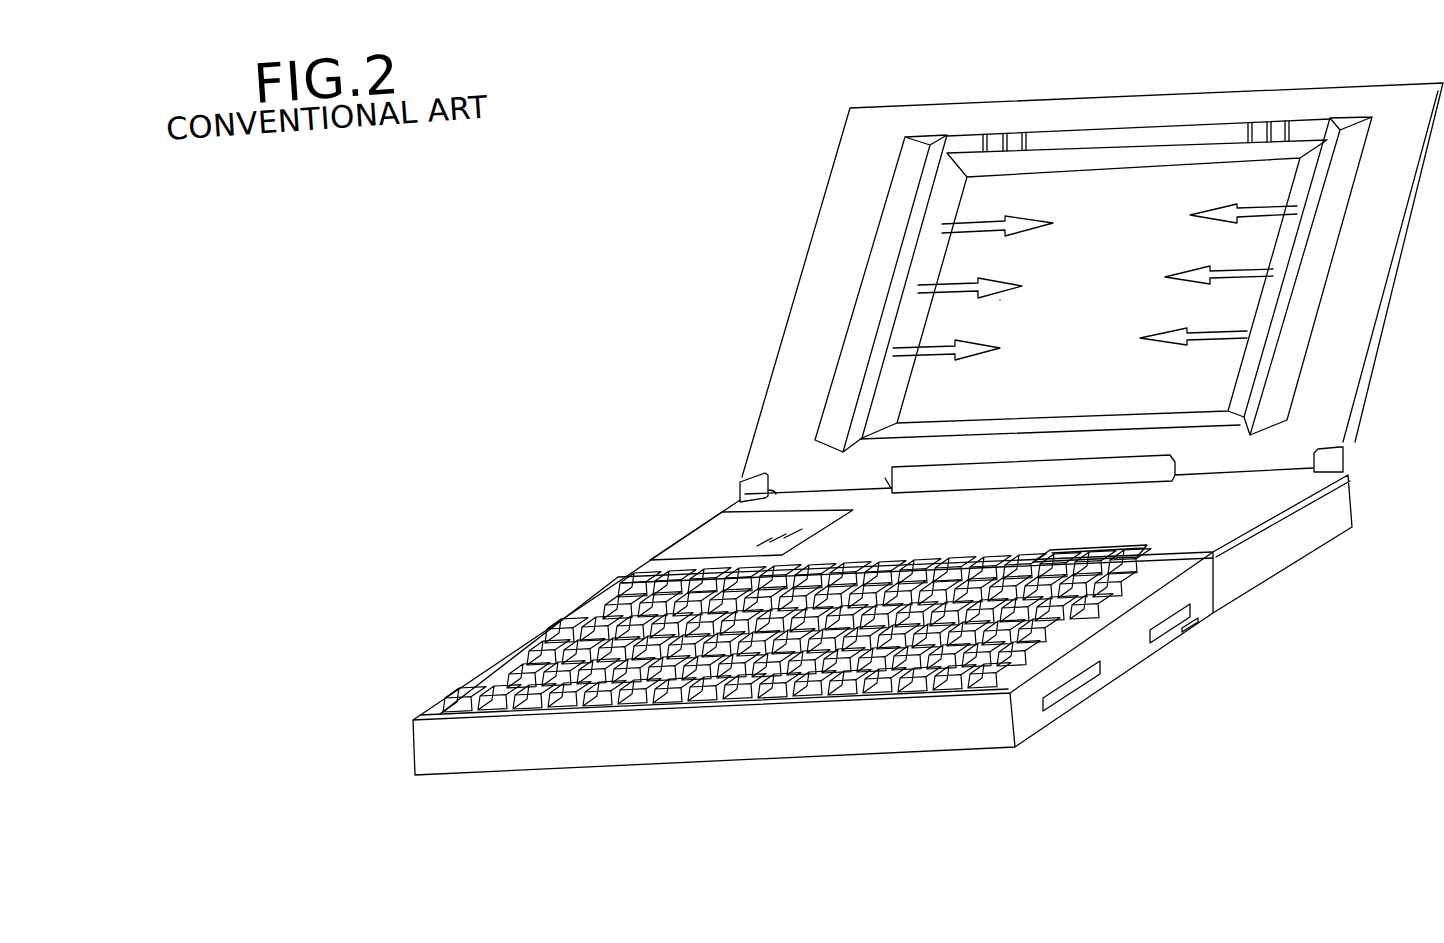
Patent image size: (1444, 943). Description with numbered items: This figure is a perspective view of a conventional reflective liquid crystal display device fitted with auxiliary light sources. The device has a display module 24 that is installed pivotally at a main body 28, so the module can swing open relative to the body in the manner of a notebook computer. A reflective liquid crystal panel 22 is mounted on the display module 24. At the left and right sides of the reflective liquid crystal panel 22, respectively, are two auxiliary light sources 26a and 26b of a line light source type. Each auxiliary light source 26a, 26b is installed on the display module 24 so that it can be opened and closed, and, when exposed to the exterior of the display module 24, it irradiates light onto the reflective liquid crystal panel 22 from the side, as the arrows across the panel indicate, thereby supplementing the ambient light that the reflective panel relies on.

The reflective liquid crystal panel 22 is at (1157, 165).
The display module 24 is at (1374, 354).
The auxiliary light source 26a is at (931, 146).
The auxiliary light source 26b is at (1344, 126).
The main body 28 is at (649, 757).